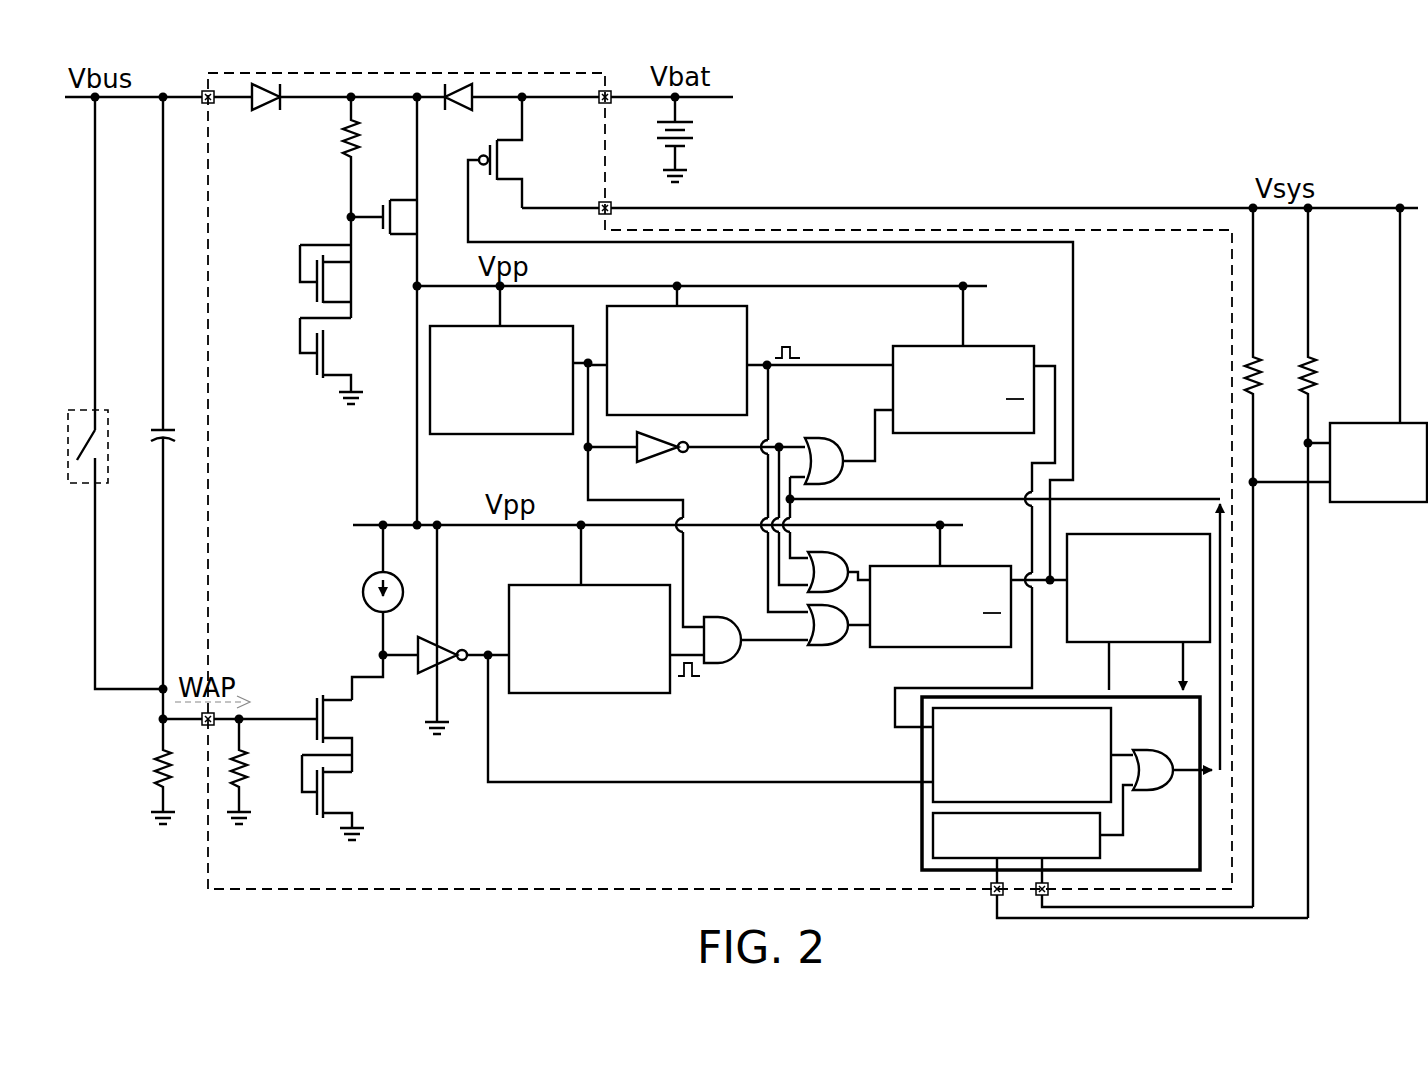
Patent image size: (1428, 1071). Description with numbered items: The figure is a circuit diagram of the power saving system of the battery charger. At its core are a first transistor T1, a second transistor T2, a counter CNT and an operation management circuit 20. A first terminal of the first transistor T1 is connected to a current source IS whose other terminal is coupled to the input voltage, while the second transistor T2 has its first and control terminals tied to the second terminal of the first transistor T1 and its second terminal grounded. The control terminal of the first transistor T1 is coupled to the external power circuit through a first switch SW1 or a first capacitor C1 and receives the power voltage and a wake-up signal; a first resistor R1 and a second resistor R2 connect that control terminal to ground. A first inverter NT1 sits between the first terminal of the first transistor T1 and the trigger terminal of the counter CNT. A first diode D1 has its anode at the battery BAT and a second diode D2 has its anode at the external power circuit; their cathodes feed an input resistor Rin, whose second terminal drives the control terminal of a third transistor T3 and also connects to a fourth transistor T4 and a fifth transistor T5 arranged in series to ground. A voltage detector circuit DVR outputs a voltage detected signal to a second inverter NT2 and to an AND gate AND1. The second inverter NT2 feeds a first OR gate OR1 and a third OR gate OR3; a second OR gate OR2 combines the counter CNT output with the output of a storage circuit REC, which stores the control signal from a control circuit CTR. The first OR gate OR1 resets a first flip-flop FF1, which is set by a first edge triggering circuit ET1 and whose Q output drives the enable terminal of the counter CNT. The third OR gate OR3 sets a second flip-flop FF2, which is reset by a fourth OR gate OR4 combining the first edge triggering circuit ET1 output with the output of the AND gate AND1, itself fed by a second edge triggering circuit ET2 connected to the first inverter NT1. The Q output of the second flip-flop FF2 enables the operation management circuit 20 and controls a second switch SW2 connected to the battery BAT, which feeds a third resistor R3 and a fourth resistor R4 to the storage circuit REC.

The operation management circuit 20 is at (1140, 534).
The first diode D1 is at (460, 114).
The second diode D2 is at (268, 114).
The input resistor Rin is at (374, 157).
The first transistor T1 is at (352, 733).
The second transistor T2 is at (344, 797).
The third transistor T3 is at (400, 217).
The fourth transistor T4 is at (344, 260).
The fifth transistor T5 is at (344, 353).
The first switch SW1 is at (115, 393).
The second switch SW2 is at (770, 338).
The battery BAT is at (703, 139).
The first capacitor C1 is at (178, 408).
The first resistor R1 is at (258, 771).
The second resistor R2 is at (145, 771).
The third resistor R3 is at (1287, 557).
The fourth resistor R4 is at (1323, 563).
The current source IS is at (362, 592).
The first inverter NT1 is at (450, 648).
The second inverter NT2 is at (655, 458).
The voltage detector circuit DVR is at (465, 434).
The first edge triggering circuit ET1 is at (747, 330).
The second edge triggering circuit ET2 is at (590, 693).
The first OR gate OR1 is at (840, 420).
The second OR gate OR2 is at (1158, 790).
The third OR gate OR3 is at (832, 565).
The fourth OR gate OR4 is at (823, 645).
The AND gate AND1 is at (723, 663).
The first flip-flop FF1 is at (963, 433).
The second flip-flop FF2 is at (940, 647).
The counter CNT is at (933, 755).
The storage circuit REC is at (933, 835).
The control circuit CTR is at (1380, 502).